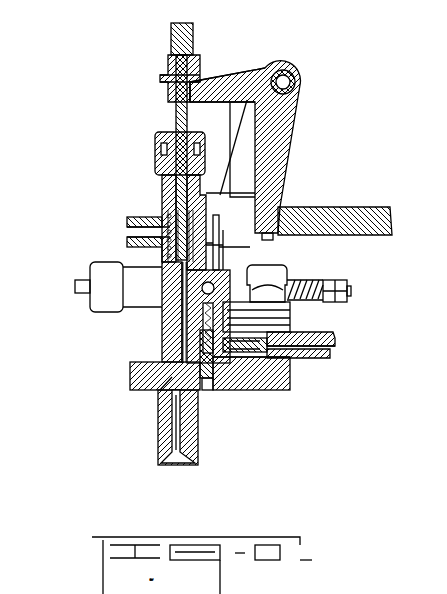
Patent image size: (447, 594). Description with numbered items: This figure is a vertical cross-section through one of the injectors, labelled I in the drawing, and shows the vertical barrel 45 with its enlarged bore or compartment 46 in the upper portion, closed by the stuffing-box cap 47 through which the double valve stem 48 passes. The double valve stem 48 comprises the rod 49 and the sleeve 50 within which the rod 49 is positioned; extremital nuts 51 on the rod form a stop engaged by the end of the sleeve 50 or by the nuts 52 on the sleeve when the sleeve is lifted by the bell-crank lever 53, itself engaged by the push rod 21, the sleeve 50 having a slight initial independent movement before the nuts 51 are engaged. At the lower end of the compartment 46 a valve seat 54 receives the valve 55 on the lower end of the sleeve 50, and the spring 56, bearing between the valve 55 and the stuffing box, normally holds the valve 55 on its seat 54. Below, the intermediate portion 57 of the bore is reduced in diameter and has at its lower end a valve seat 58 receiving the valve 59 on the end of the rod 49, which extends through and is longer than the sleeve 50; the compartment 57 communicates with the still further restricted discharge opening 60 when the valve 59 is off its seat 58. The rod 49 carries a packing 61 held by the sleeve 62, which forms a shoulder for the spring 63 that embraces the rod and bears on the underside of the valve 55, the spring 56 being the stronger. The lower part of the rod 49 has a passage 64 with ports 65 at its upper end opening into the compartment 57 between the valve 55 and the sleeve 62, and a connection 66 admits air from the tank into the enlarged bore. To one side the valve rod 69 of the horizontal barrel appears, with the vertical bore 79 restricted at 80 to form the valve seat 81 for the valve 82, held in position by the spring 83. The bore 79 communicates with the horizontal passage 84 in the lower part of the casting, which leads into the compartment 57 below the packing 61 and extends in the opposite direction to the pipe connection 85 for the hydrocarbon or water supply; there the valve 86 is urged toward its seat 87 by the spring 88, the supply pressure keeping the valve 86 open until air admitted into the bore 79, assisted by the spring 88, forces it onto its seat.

The extremital nuts 51 is at (172, 36).
The nuts 52 is at (168, 66).
The lever I is at (283, 121).
The rod 49 is at (215, 195).
The sleeve 50 is at (197, 80).
The bell-crank lever 53 is at (263, 73).
The push rod 21 is at (353, 208).
The spring 56 is at (210, 230).
The stuffing-box cap 47 is at (158, 148).
The double valve stem 48 is at (200, 148).
The vertical barrel 45 is at (162, 192).
The enlarged bore 46 is at (200, 213).
The connection 66 is at (133, 217).
The valve seat 54 is at (168, 262).
The spring 63 is at (173, 277).
The ports 65 is at (173, 288).
The sleeve 62 is at (160, 302).
The packing 61 is at (165, 320).
The passage 64 is at (170, 333).
The valve 55 is at (203, 262).
The intermediate portion of the bore 57 is at (225, 270).
The vertical bore 79 is at (290, 330).
The valve seat 81 is at (290, 310).
The valve 82 is at (290, 322).
The restriction 80 is at (230, 292).
The valve rod 69 is at (350, 280).
The spring 88 is at (335, 335).
The pipe connection 85 is at (357, 356).
The valve 86 is at (300, 350).
The seat 87 is at (293, 357).
The spring 83 is at (288, 377).
The horizontal passage 84 is at (243, 390).
The valve seat 58 is at (200, 392).
The valve 59 is at (167, 385).
The discharge opening 60 is at (177, 435).